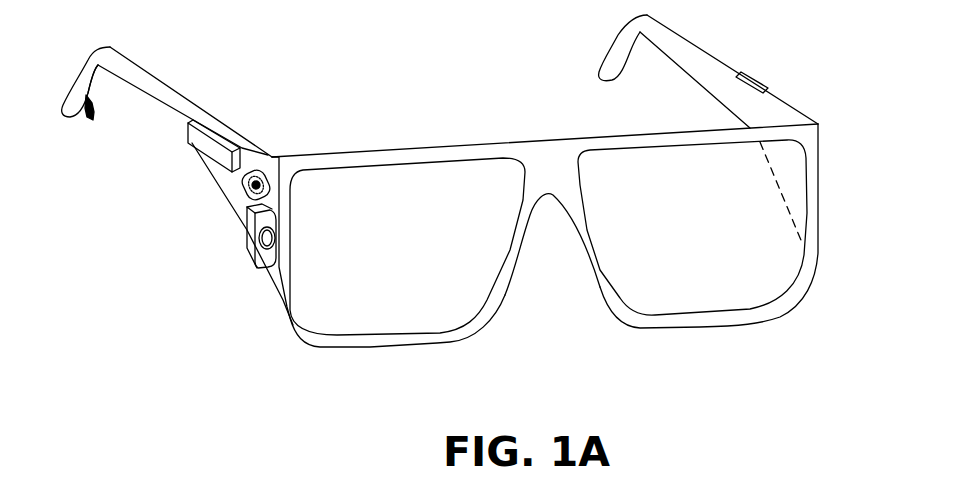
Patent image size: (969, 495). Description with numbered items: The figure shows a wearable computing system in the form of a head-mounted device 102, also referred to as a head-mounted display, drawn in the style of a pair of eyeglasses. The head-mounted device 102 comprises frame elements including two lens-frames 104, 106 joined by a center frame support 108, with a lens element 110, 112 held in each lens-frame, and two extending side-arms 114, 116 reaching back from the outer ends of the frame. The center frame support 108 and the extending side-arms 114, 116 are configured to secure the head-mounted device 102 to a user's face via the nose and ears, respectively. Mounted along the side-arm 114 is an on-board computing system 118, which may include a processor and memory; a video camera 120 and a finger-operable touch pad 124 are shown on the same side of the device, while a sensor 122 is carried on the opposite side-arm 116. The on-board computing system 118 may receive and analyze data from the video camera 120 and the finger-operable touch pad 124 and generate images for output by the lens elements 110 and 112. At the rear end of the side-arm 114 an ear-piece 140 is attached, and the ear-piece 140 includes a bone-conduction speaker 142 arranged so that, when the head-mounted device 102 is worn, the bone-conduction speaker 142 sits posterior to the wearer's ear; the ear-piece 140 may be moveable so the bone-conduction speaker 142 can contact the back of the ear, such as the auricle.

The head-mounted device 102 is at (393, 59).
The lens-frame 104 is at (377, 157).
The lens-frame 106 is at (627, 140).
The center frame support 108 is at (550, 162).
The lens element 110 is at (350, 310).
The lens element 112 is at (710, 293).
The extending side-arm 114 is at (210, 116).
The extending side-arm 116 is at (716, 57).
The on-board computing system 118 is at (205, 140).
The video camera 120 is at (247, 230).
The sensor 122 is at (757, 77).
The finger-operable touch pad 124 is at (245, 184).
The ear-piece 140 is at (101, 89).
The bone-conduction speaker 142 is at (94, 95).